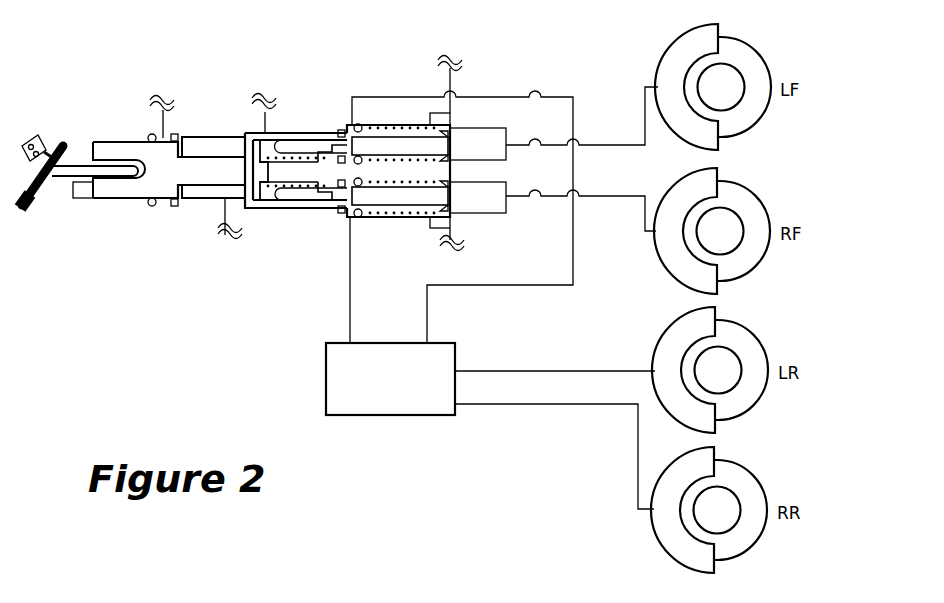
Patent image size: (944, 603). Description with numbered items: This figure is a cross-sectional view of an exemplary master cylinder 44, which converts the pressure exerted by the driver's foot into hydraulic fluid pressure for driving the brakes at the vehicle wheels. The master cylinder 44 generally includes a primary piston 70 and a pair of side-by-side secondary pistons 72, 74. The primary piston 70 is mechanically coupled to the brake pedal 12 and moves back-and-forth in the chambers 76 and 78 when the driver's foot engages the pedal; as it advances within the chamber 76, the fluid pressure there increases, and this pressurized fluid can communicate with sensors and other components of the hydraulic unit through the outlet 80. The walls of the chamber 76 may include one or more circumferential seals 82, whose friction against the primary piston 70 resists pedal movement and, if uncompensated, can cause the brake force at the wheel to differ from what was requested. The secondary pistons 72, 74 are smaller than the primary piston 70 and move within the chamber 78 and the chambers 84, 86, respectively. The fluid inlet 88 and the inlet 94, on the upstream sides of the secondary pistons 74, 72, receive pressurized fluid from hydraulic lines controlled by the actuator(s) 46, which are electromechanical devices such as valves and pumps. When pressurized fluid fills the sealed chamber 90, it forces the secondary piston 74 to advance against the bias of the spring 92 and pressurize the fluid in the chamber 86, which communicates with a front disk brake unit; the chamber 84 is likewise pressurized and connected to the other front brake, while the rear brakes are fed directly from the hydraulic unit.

The brake pedal 12 is at (62, 143).
The master cylinder 44 is at (589, 96).
The actuator(s) 46 is at (326, 383).
The primary piston 70 is at (130, 190).
The secondary piston 72 is at (393, 142).
The secondary piston 74 is at (365, 192).
The chamber 76 is at (211, 148).
The chamber 78 is at (265, 192).
The outlet 80 is at (222, 207).
The circumferential seal 82 is at (178, 136).
The chamber 84 is at (473, 145).
The chamber 86 is at (485, 200).
The fluid inlet 88 is at (349, 219).
The sealed chamber 90 is at (345, 211).
The spring 92 is at (405, 218).
The inlet 94 is at (350, 123).